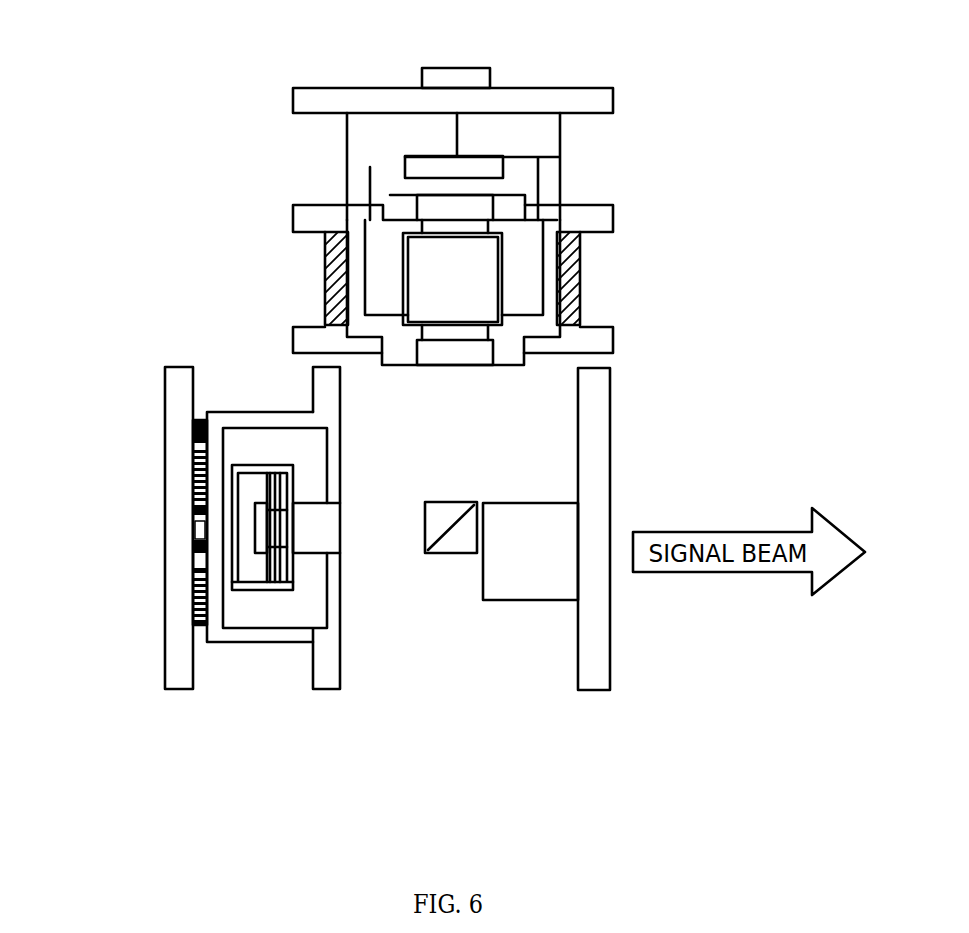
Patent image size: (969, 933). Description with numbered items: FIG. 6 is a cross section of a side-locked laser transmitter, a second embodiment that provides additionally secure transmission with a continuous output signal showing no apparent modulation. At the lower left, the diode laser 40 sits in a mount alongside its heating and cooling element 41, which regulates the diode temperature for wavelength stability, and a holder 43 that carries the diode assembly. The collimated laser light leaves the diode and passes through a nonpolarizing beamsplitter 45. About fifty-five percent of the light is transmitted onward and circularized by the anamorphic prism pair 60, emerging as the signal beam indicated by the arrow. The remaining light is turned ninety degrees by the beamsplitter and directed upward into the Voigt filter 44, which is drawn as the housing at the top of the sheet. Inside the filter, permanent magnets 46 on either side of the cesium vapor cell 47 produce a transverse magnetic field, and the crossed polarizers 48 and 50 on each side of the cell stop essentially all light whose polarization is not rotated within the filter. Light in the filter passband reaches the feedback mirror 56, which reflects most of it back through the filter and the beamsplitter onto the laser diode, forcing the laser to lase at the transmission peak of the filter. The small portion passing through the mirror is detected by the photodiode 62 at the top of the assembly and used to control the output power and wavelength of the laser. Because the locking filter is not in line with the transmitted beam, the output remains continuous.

The amplified photodiode 62 is at (413, 73).
The feedback mirror 56 is at (403, 167).
The crossed polarizer 50 is at (417, 213).
The Voigt filter 44 is at (615, 215).
The permanent magnets 46 is at (317, 283).
The crystal cube 47 is at (495, 302).
The crossed polarizer 48 is at (413, 355).
The heating and cooling element 41 is at (195, 562).
The diode laser 40 is at (257, 553).
The holder bracket 43 is at (297, 555).
The nonpolarizing beamsplitter 45 is at (445, 553).
The anamorphic prism pair 60 is at (523, 600).